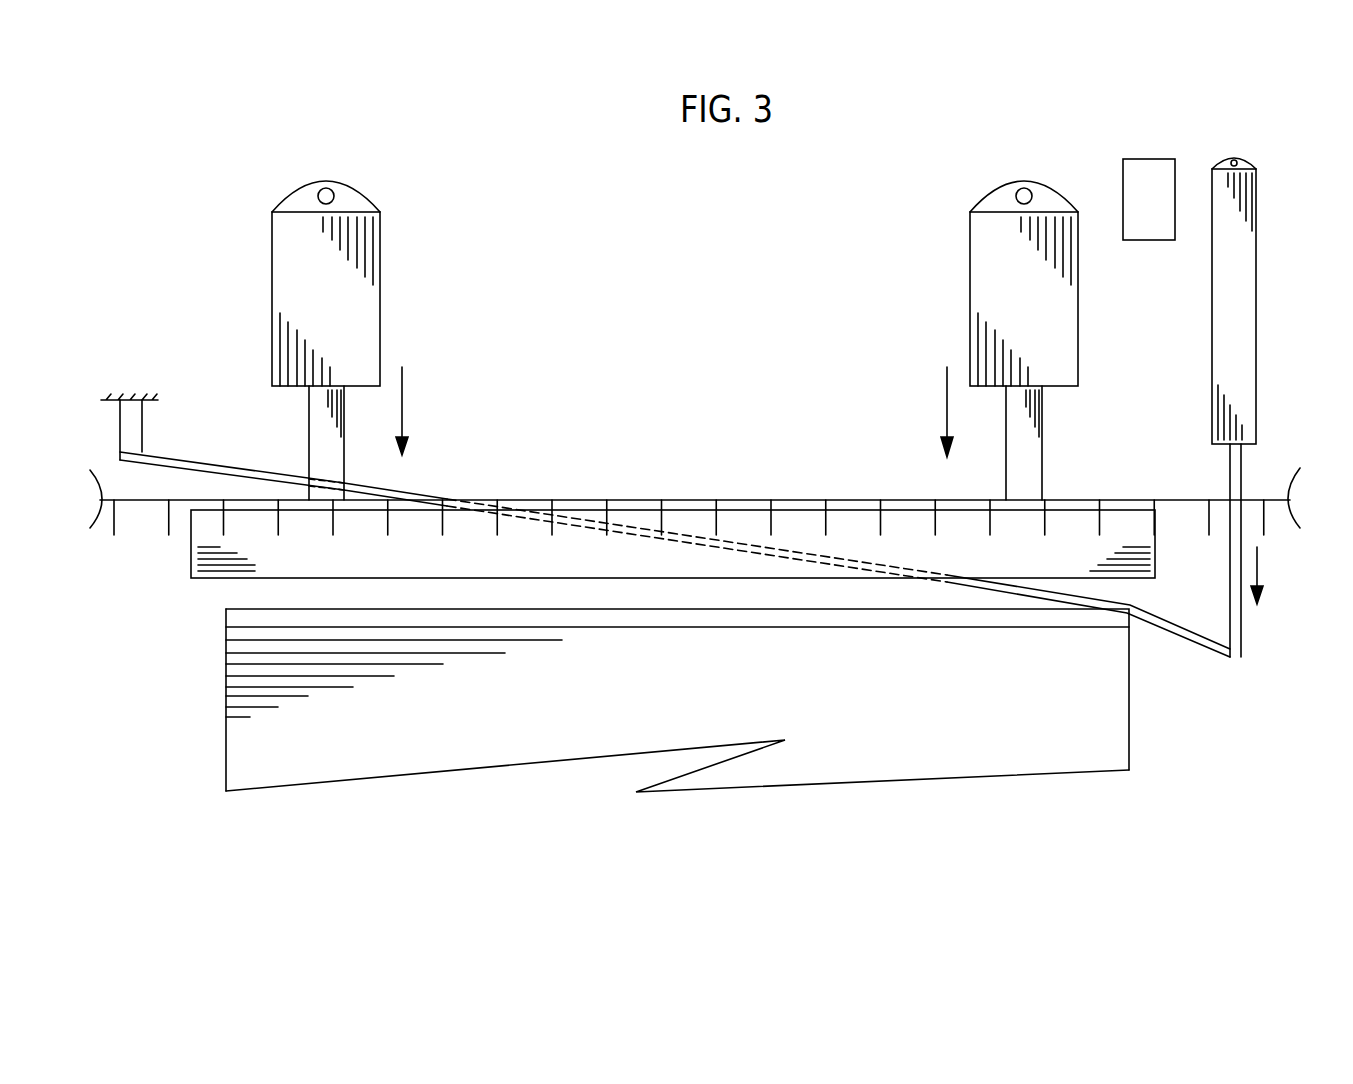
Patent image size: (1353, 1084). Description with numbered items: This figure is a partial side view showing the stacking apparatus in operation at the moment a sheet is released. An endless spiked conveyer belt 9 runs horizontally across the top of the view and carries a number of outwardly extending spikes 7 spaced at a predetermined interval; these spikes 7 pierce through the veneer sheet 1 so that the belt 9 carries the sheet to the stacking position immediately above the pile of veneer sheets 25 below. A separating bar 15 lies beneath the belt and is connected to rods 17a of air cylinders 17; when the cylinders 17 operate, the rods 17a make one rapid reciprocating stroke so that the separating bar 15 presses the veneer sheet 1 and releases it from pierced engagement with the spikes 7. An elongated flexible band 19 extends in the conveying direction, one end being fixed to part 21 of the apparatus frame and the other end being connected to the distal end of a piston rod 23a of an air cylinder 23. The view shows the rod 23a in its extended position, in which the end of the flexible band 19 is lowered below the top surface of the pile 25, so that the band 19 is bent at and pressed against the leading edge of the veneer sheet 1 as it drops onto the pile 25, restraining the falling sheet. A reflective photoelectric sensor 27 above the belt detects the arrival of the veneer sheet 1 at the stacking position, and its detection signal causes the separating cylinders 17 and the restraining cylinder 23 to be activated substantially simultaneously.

The veneer sheet 1 is at (637, 618).
The spikes 7 is at (168, 512).
The endless spiked conveyer belt 9 is at (640, 500).
The separating bar 15 is at (303, 552).
The air cylinder 17 is at (342, 313).
The rod 17a is at (328, 459).
The elongated flexible band 19 is at (240, 448).
The part of the frame 21 is at (142, 427).
The air cylinder 23 is at (1230, 293).
The piston rod 23a is at (1242, 618).
The pile of veneer sheets 25 is at (803, 706).
The sensor 27 is at (1145, 193).